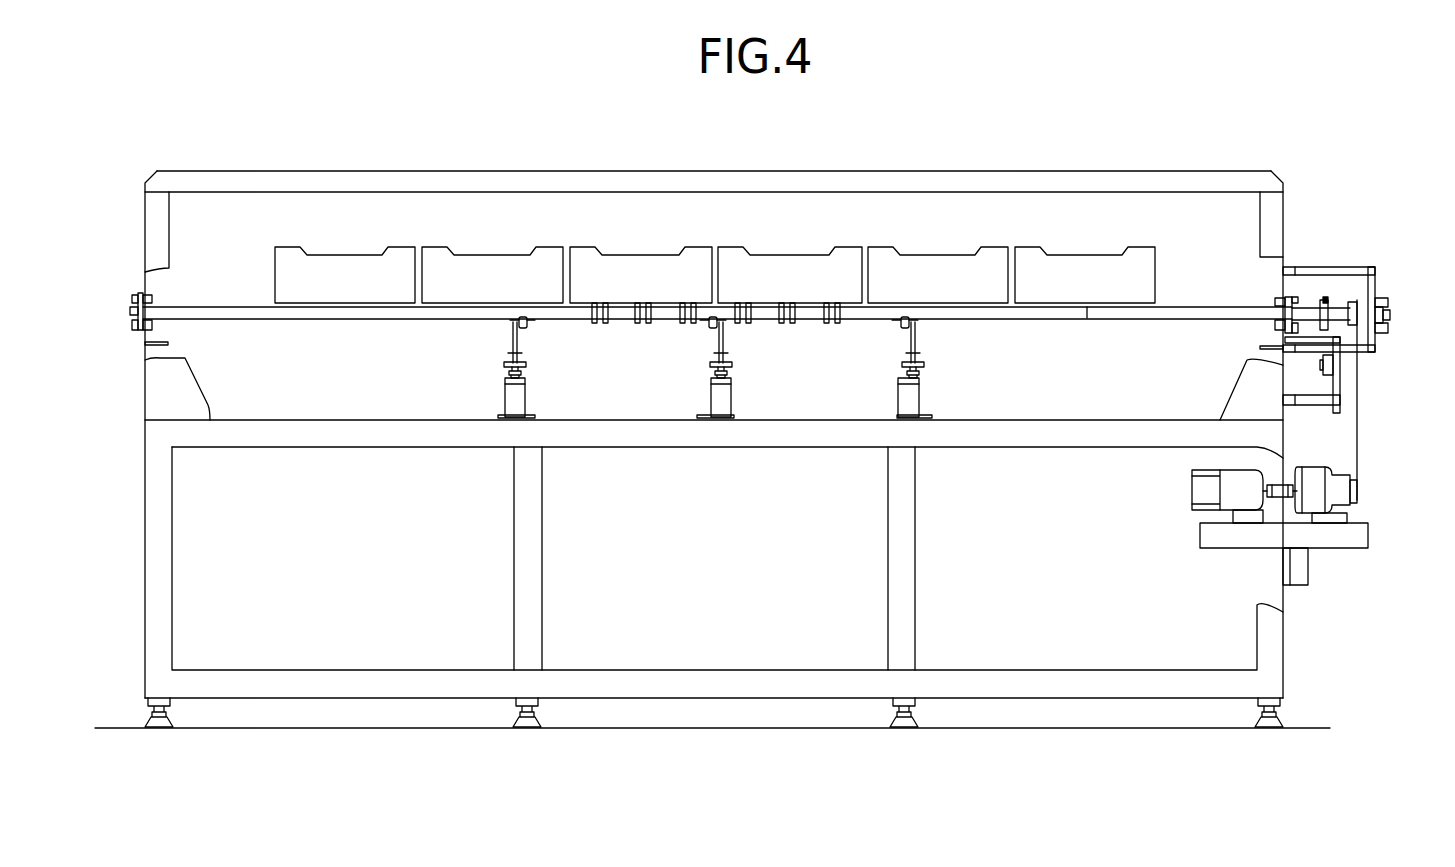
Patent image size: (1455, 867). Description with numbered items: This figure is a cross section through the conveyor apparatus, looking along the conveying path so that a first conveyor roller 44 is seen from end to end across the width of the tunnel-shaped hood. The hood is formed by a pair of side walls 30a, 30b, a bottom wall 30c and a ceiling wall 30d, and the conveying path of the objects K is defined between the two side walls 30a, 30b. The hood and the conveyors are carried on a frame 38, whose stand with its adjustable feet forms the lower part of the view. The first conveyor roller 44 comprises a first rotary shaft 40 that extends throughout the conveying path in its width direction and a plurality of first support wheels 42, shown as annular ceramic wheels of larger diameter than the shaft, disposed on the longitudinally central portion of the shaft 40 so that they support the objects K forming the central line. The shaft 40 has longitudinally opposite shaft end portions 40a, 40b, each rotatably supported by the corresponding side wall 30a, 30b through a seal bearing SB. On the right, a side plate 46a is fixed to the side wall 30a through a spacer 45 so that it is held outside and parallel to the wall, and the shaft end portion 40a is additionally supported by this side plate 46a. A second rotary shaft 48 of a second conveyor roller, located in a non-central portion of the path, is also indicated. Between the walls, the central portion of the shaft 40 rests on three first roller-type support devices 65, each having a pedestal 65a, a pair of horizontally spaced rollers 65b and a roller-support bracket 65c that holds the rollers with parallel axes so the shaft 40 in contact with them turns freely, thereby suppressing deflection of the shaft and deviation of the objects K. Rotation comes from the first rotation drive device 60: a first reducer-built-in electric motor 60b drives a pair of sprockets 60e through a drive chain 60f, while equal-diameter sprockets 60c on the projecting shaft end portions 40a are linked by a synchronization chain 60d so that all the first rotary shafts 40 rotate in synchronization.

The side wall 30a is at (1283, 230).
The side wall 30b is at (147, 228).
The bottom wall 30c is at (357, 422).
The ceiling wall 30d is at (723, 192).
The frame 38 is at (903, 572).
The first rotary shaft 40 is at (370, 313).
The shaft end portion 40a is at (1307, 315).
The shaft end portion 40b is at (130, 312).
The first support wheel 42 is at (643, 313).
The first conveyor roller 44 is at (263, 338).
The spacer 45 is at (1357, 272).
The side plate 46a is at (1373, 289).
The second rotary shaft 48 is at (1087, 318).
The first rotation drive device 60 is at (1282, 539).
The first reducer-built-in electric motor 60b is at (1213, 490).
The sprocket 60c is at (1320, 303).
The synchronization chain 60d is at (1327, 300).
The sprocket 60e is at (1359, 500).
The drive chain 60f is at (1358, 397).
The first roller-type support device 65 is at (761, 367).
The pedestal 65a is at (513, 382).
The roller 65b is at (527, 330).
The roller-support bracket 65c is at (510, 345).
The object K is at (368, 268).
The seal bearing SB is at (133, 330).